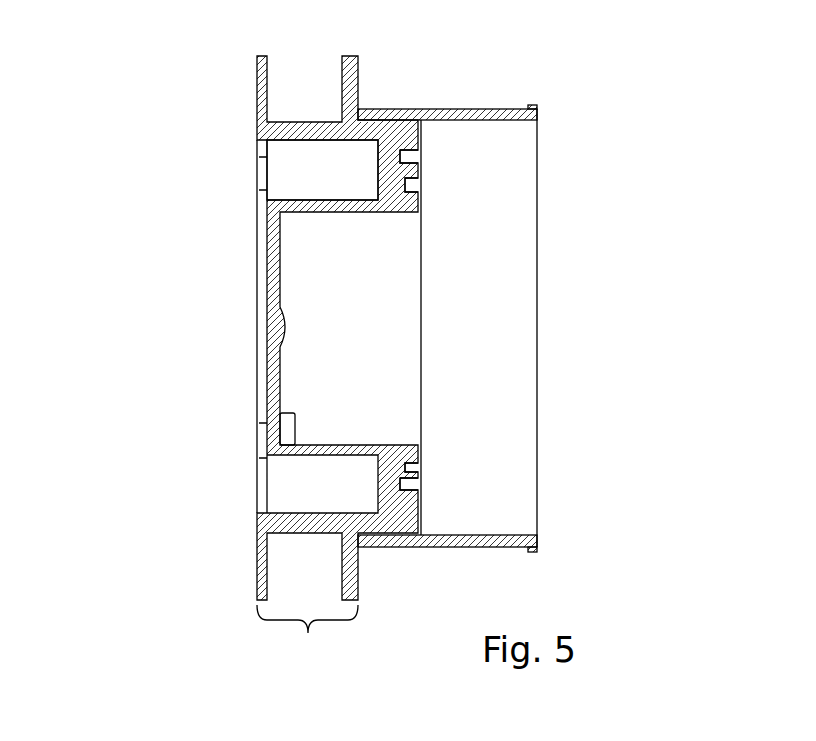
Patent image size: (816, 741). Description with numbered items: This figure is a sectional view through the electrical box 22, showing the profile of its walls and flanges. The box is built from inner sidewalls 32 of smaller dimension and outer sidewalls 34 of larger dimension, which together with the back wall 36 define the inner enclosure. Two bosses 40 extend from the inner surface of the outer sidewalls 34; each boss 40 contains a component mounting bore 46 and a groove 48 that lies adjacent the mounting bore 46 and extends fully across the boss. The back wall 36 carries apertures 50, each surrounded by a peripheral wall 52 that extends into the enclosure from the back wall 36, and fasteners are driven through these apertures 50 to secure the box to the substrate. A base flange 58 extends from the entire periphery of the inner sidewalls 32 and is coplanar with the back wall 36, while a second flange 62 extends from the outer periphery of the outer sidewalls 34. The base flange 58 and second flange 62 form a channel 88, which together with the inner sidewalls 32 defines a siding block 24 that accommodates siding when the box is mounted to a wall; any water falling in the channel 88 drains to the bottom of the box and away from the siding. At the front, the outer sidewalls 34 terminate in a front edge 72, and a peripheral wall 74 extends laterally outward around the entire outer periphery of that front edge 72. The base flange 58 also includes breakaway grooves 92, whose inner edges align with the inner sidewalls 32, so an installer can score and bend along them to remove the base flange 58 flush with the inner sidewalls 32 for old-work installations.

The electrical box 22 is at (184, 114).
The siding block 24 is at (307, 636).
The inner sidewall 32 is at (300, 134).
The outer sidewall 34 is at (441, 120).
The back wall 36 is at (276, 258).
The boss 40 is at (405, 152).
The component mounting bore 46 is at (408, 191).
The groove 48 is at (400, 168).
The aperture 50 is at (263, 440).
The peripheral wall 52 is at (296, 428).
The base flange 58 is at (260, 570).
The second flange 62 is at (358, 573).
The front edge 72 is at (537, 327).
The peripheral wall 74 is at (535, 105).
The channel 88 is at (305, 100).
The breakaway groove 92 is at (260, 118).